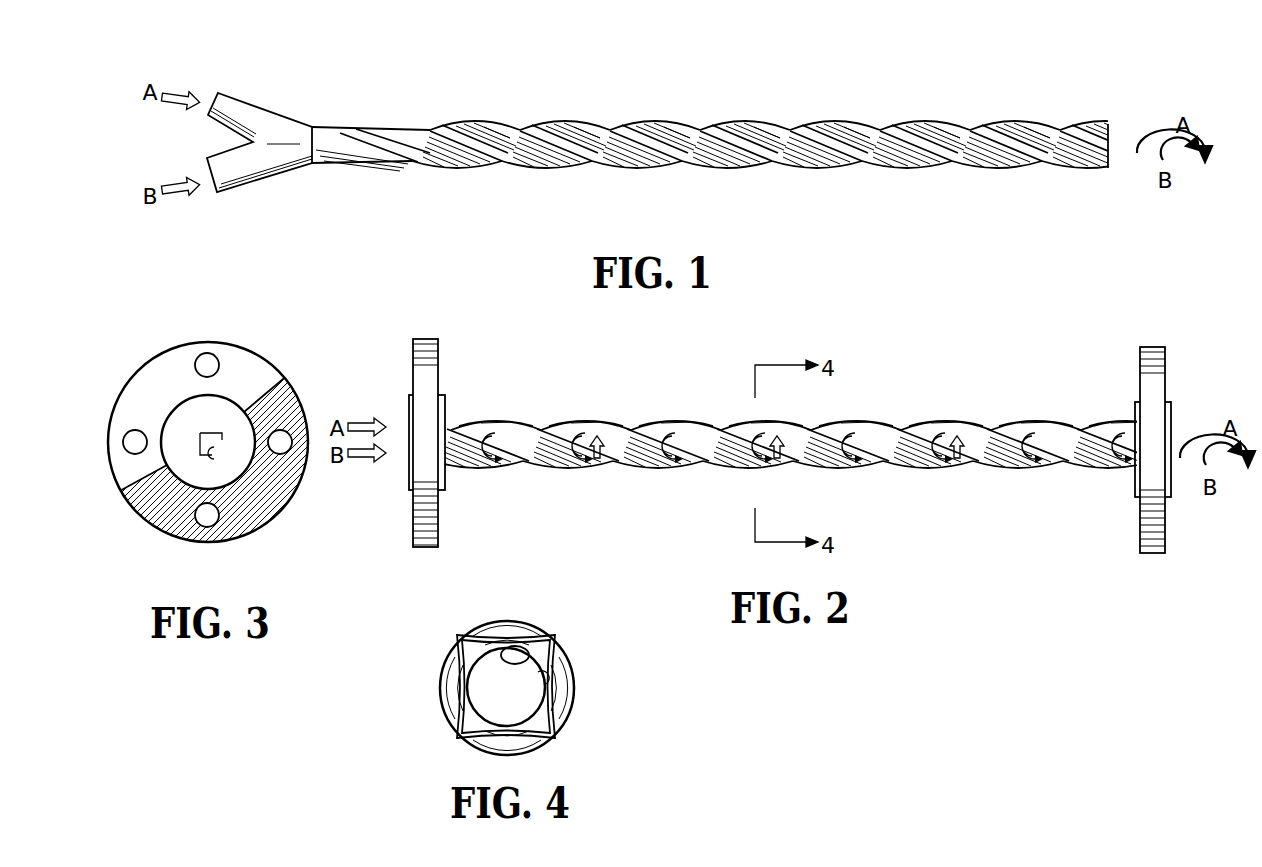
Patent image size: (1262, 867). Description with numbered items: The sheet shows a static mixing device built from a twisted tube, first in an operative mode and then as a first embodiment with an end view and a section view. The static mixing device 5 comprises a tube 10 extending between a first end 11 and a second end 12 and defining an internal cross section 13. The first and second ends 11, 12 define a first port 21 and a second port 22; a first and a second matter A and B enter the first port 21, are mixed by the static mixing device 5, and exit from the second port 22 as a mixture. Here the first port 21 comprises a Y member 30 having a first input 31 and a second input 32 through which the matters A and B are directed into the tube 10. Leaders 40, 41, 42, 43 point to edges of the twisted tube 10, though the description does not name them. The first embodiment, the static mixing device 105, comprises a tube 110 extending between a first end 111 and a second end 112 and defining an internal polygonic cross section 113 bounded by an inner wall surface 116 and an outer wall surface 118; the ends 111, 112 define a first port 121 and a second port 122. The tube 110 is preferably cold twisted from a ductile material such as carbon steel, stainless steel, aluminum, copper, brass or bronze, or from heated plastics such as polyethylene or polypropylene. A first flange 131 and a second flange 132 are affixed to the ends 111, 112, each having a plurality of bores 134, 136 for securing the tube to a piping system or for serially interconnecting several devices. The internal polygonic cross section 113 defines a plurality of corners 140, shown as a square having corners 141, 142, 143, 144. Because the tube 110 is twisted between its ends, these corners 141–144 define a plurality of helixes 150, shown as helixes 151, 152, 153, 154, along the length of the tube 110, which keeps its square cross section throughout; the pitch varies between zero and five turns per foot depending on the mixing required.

In FIG. 1, the static mixing device 5 is at (395, 100).
In FIG. 1, the tube 10 is at (641, 116).
In FIG. 1, the first end 11 is at (318, 125).
In FIG. 1, the second end 12 is at (1100, 127).
In FIG. 1, the internal cross section 13 is at (837, 110).
In FIG. 1, the first port 21 is at (352, 180).
In FIG. 1, the second port 22 is at (1080, 184).
In FIG. 1, the Y member 30 is at (250, 162).
In FIG. 1, the first input 31 is at (208, 108).
In FIG. 1, the second input 32 is at (206, 165).
In FIG. 1, the first edge 40 is at (518, 172).
In FIG. 1, the second edge 41 is at (562, 172).
In FIG. 1, the third edge 42 is at (610, 167).
In FIG. 1, the fourth edge 43 is at (667, 165).
In FIG. 2, the static mixing device 105 is at (602, 377).
In FIG. 3, the static mixing device 105 is at (144, 328).
In FIG. 4, the static mixing device 105 is at (440, 623).
In FIG. 2, the tube 110 is at (678, 420).
In FIG. 3, the tube 110 is at (208, 440).
In FIG. 4, the tube 110 is at (505, 630).
In FIG. 2, the first end 111 is at (470, 423).
In FIG. 3, the first end 111 is at (203, 427).
In FIG. 2, the second end 112 is at (1115, 424).
In FIG. 2, the internal polygonic cross section 113 is at (903, 427).
In FIG. 3, the internal polygonic cross section 113 is at (217, 450).
In FIG. 4, the internal polygonic cross section 113 is at (540, 685).
In FIG. 4, the inner wall surface 116 is at (530, 655).
In FIG. 2, the outer wall surface 118 is at (553, 470).
In FIG. 4, the outer wall surface 118 is at (555, 700).
In FIG. 2, the first port 121 is at (480, 487).
In FIG. 2, the second port 122 is at (1103, 483).
In FIG. 2, the first flange 131 is at (425, 338).
In FIG. 3, the first flange 131 is at (180, 357).
In FIG. 2, the second flange 132 is at (1152, 347).
In FIG. 2, the bores 134 is at (440, 360).
In FIG. 3, the bores 134 is at (193, 535).
In FIG. 2, the bores 136 is at (1140, 375).
In FIG. 2, the corners 140 is at (650, 469).
In FIG. 3, the corners 140 is at (203, 430).
In FIG. 4, the corners 140 is at (457, 636).
In FIG. 2, the corner 141 is at (690, 470).
In FIG. 3, the corner 141 is at (198, 430).
In FIG. 4, the corner 141 is at (450, 665).
In FIG. 2, the corner 142 is at (750, 470).
In FIG. 3, the corner 142 is at (193, 450).
In FIG. 4, the corner 142 is at (457, 738).
In FIG. 2, the corner 143 is at (838, 476).
In FIG. 3, the corner 143 is at (215, 457).
In FIG. 4, the corner 143 is at (555, 738).
In FIG. 2, the corner 144 is at (930, 473).
In FIG. 3, the corner 144 is at (257, 413).
In FIG. 4, the corner 144 is at (555, 637).
In FIG. 2, the helixes 150 is at (674, 496).
In FIG. 2, the helix 151 is at (680, 485).
In FIG. 2, the helix 152 is at (805, 478).
In FIG. 2, the helix 153 is at (875, 467).
In FIG. 2, the helix 154 is at (960, 466).